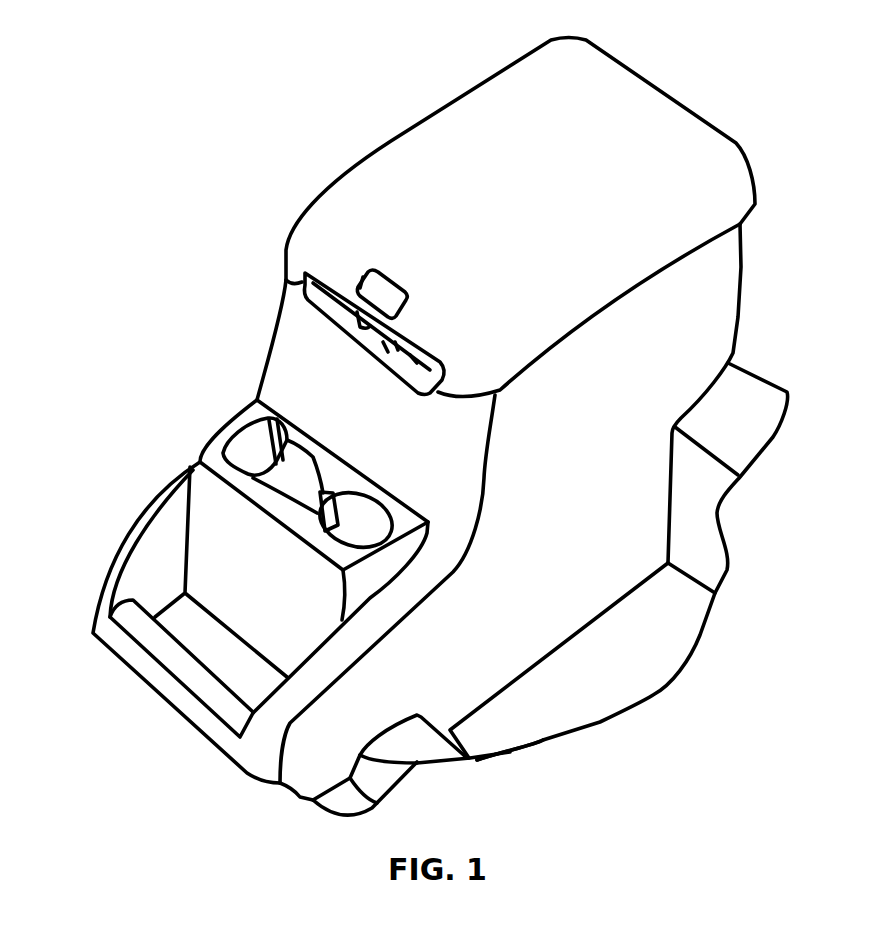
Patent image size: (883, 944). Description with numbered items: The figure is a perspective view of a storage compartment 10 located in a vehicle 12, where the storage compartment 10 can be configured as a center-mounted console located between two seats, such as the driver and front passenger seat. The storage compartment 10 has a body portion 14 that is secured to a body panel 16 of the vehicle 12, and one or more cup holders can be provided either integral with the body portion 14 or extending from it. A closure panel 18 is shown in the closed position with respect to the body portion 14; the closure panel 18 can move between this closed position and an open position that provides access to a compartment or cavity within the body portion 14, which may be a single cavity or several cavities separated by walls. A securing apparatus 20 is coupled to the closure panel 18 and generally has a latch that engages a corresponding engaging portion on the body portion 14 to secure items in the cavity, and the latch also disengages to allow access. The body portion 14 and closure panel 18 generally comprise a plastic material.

The storage compartment 10 is at (275, 246).
The vehicle 12 is at (757, 348).
The body portion 14 is at (272, 323).
The body panel 16 is at (653, 693).
The closure panel 18 is at (391, 142).
The securing apparatus 20 is at (415, 368).